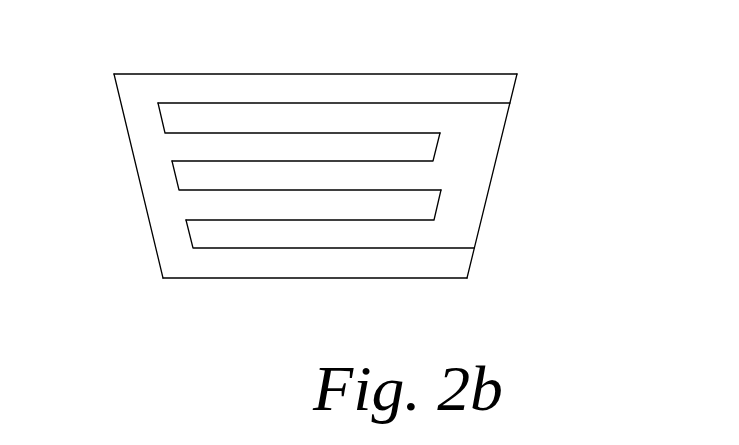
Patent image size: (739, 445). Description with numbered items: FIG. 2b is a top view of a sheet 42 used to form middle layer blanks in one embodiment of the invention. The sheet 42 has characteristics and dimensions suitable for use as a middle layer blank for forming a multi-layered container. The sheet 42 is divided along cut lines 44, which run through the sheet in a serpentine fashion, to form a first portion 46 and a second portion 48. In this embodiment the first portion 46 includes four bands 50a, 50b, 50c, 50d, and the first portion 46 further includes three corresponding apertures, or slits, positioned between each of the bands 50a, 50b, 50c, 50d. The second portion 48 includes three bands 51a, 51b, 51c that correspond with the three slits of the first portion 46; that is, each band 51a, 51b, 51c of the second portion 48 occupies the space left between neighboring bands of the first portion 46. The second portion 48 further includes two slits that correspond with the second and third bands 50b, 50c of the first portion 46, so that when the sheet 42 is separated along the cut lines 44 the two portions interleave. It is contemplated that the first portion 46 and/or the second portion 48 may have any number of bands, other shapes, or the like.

The sheet 42 is at (556, 61).
The cut lines 44 is at (347, 103).
The first portion 46 is at (124, 97).
The second portion 48 is at (503, 116).
The band 50a is at (444, 80).
The band 50b is at (433, 147).
The band 50c is at (430, 205).
The band 50d is at (465, 260).
The band 51a is at (179, 115).
The band 51b is at (182, 172).
The band 51c is at (195, 237).